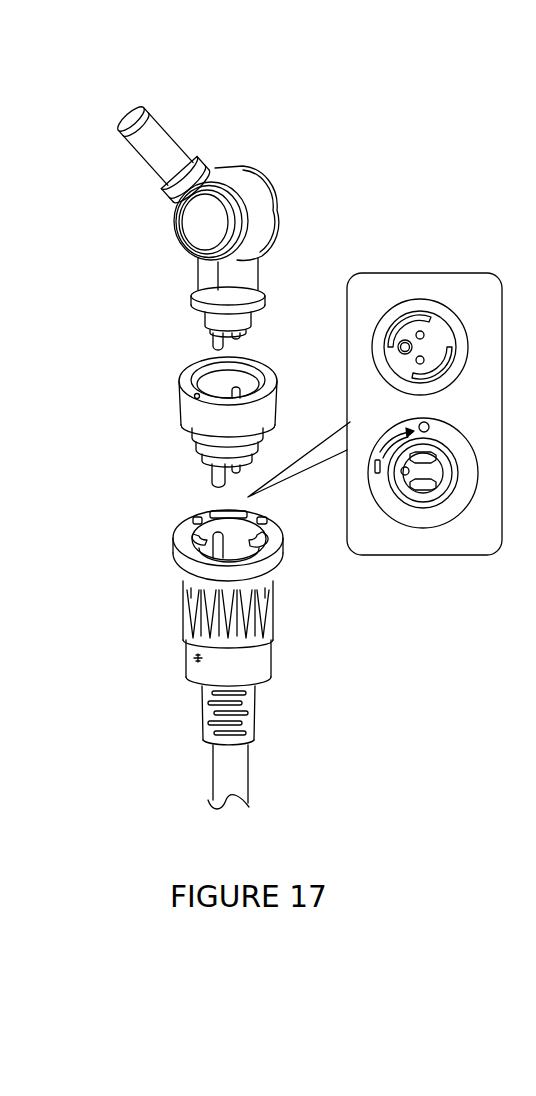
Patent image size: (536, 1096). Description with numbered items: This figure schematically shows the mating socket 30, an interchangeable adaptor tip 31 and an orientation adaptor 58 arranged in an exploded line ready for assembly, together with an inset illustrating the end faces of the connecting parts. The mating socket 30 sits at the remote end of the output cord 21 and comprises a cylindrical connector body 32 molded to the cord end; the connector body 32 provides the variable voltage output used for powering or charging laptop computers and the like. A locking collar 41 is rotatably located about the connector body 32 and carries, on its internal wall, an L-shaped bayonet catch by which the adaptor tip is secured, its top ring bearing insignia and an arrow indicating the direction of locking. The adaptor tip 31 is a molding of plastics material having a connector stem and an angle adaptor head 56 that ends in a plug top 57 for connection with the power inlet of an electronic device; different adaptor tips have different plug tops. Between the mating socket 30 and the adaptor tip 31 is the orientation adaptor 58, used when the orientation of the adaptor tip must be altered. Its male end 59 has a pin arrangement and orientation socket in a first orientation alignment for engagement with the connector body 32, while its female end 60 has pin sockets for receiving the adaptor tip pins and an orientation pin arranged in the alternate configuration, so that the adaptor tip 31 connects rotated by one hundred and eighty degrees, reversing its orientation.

The adaptor tip 31 is at (280, 150).
The plug top 57 is at (165, 140).
The angle adaptor head 56 is at (205, 223).
The orientation adaptor 58 is at (190, 413).
The female end 60 is at (212, 373).
The male end 59 is at (200, 450).
The mating socket 30 is at (335, 682).
The locking collar 41 is at (182, 613).
The connector body 32 is at (252, 658).
The output cord 21 is at (232, 770).